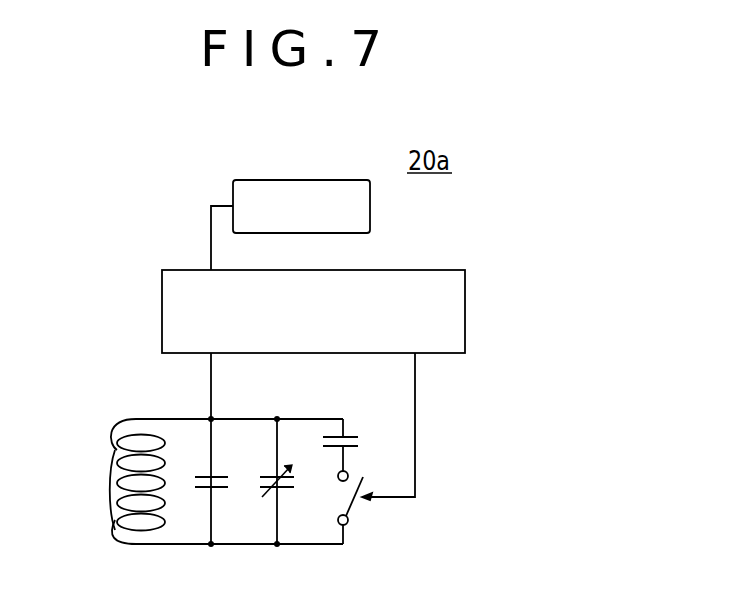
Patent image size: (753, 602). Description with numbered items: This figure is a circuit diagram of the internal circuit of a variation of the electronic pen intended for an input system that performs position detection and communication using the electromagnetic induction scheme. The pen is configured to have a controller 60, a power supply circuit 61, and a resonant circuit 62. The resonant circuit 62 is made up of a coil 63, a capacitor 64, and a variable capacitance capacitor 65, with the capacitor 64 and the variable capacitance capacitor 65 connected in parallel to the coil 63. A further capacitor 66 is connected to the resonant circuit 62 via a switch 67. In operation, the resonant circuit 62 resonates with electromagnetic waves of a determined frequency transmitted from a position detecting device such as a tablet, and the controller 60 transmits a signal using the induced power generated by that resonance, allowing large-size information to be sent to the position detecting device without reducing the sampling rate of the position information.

The controller 60 is at (162, 316).
The power supply circuit 61 is at (298, 180).
The resonant circuit 62 is at (152, 412).
The coil 63 is at (117, 483).
The capacitor 64 is at (216, 490).
The variable capacitance capacitor 65 is at (282, 490).
The capacitor 66 is at (350, 432).
The switch 67 is at (350, 520).